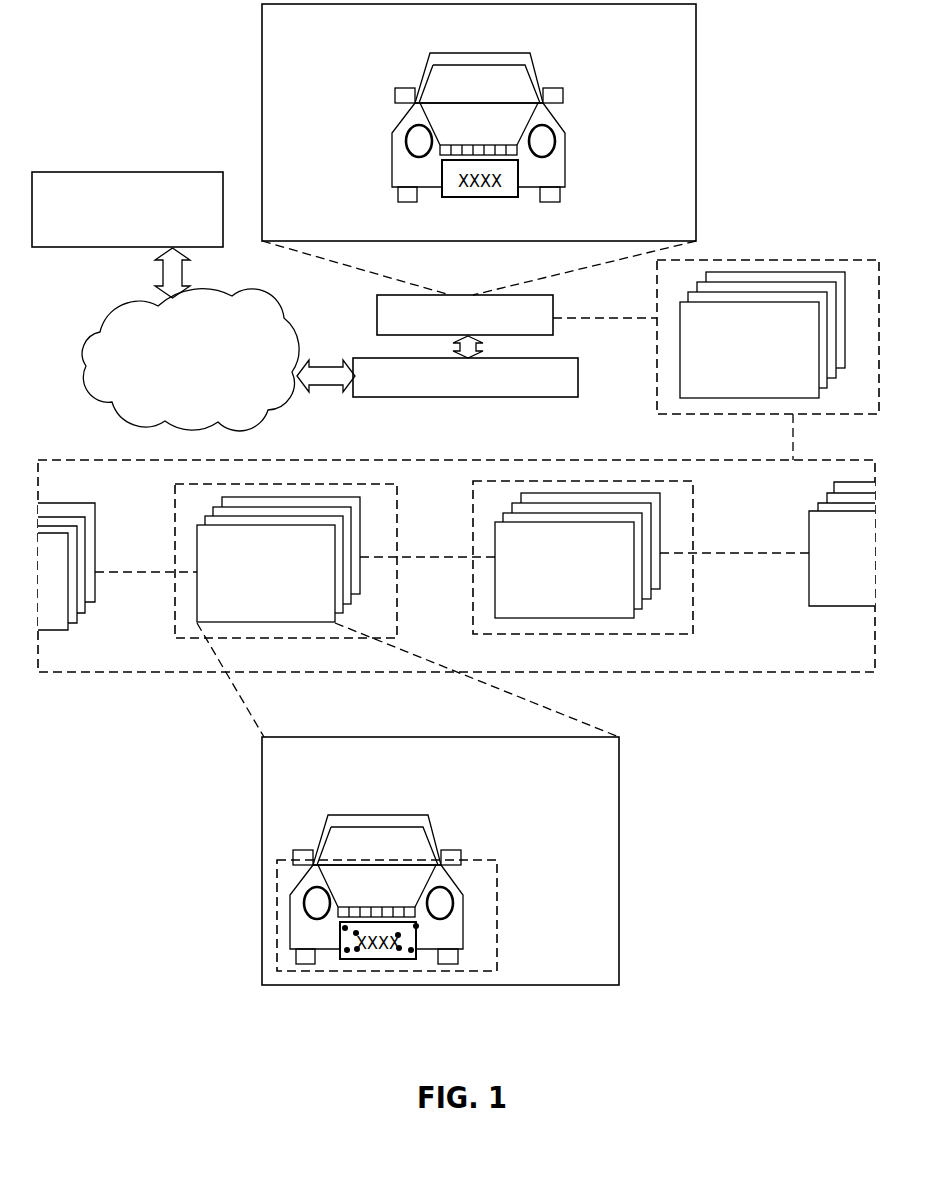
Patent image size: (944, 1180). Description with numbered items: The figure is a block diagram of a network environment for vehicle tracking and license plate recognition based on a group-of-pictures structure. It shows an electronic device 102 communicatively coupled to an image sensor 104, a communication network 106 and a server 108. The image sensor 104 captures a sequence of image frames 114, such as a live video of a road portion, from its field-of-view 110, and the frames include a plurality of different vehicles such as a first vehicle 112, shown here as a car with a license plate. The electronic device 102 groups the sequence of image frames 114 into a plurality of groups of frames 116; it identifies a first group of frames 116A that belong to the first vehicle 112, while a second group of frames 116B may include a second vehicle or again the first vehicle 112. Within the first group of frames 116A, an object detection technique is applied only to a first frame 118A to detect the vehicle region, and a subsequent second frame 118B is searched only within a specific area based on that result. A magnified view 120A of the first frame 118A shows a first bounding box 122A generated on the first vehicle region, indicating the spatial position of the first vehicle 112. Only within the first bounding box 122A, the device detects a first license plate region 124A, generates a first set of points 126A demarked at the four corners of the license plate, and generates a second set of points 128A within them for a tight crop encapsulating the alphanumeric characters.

The electronic device 102 is at (465, 377).
The image sensor 104 is at (465, 315).
The communication network 106 is at (190, 360).
The server 108 is at (127, 209).
The field-of-view 110 is at (590, 265).
The first vehicle 112 is at (536, 78).
The sequence of image frames 114 is at (737, 258).
The plurality of groups of frames 116 is at (680, 460).
The first group of frames 116A is at (400, 640).
The second group of frames 116B is at (693, 540).
The first frame 118A is at (306, 553).
The second frame 118B is at (205, 522).
The magnified view 120A is at (435, 737).
The first bounding box 122A is at (497, 928).
The first license plate region 124A is at (414, 954).
The first set of points 126A is at (416, 926).
The second set of points 128A is at (398, 935).